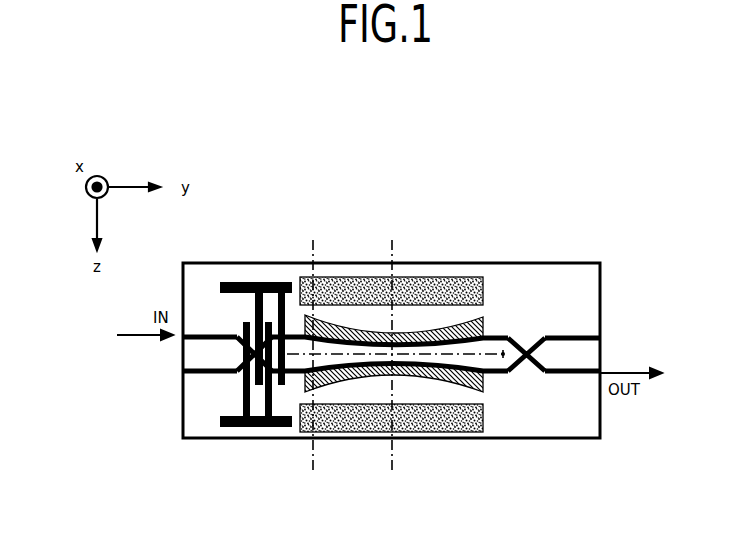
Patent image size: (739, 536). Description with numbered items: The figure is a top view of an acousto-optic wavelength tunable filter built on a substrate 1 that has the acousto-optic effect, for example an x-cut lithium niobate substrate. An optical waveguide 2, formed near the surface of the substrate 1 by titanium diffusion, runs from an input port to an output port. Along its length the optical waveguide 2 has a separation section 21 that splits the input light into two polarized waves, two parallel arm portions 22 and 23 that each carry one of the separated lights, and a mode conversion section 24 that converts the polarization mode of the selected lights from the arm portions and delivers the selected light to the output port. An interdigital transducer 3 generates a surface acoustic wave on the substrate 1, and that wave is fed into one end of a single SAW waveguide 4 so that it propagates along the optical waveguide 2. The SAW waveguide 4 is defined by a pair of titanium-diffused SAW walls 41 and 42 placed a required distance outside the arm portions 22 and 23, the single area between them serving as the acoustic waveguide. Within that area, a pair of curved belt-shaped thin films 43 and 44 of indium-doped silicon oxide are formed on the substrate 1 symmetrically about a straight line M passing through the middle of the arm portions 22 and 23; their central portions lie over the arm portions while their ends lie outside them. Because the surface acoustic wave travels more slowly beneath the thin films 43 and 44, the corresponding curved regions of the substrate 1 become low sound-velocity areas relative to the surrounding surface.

The substrate 1 is at (585, 438).
The optical waveguide 2 is at (205, 309).
The interdigital transducer 3 is at (242, 427).
The SAW waveguide 4 is at (355, 228).
The separation section 21 is at (255, 350).
The arm portion 22 is at (496, 337).
The arm portion 23 is at (495, 377).
The mode conversion section 24 is at (530, 350).
The SAW wall 41 is at (412, 277).
The SAW wall 42 is at (418, 432).
The thin film 43 is at (443, 327).
The thin film 44 is at (447, 385).
The straight line M is at (502, 353).